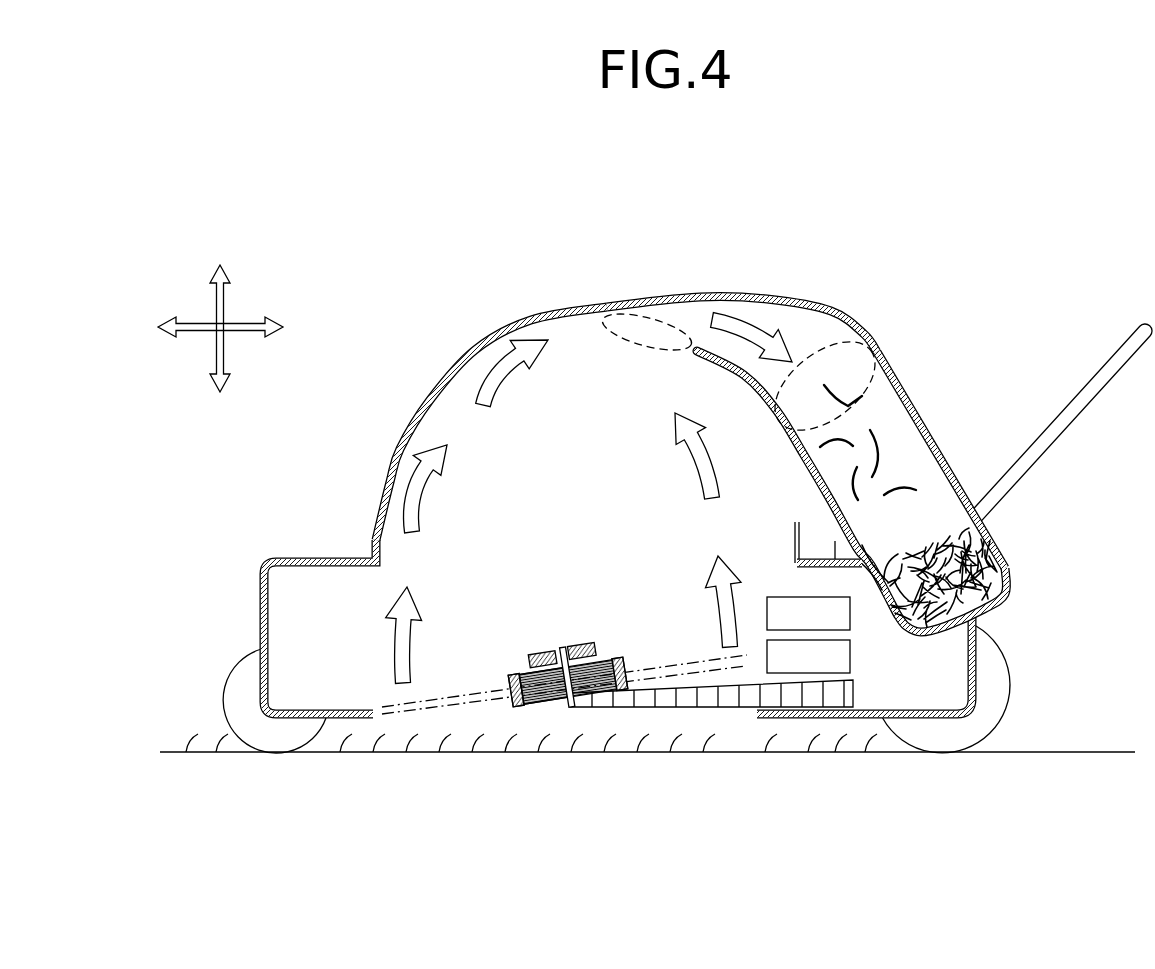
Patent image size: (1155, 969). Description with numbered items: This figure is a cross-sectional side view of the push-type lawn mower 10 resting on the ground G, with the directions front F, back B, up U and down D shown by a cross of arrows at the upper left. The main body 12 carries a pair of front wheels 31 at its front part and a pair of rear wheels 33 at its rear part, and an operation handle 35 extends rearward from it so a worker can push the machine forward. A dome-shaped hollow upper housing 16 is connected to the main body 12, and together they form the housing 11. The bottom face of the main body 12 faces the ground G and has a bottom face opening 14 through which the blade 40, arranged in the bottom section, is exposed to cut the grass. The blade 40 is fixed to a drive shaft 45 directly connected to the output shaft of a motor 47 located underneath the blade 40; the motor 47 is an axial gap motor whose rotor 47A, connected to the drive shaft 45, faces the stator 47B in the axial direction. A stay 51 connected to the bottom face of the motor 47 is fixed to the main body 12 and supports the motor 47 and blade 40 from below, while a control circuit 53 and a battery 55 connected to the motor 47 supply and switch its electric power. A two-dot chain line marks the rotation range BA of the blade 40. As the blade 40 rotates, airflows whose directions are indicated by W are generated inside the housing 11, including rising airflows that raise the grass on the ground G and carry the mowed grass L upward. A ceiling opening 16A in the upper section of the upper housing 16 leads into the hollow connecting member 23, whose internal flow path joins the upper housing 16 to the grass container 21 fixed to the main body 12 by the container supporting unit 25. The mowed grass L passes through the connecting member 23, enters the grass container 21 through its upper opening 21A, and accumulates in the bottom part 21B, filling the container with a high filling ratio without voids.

The lawn mower 10 is at (566, 275).
The housing 11 is at (287, 540).
The main body 12 is at (333, 558).
The bottom face opening 14 is at (402, 726).
The upper housing 16 is at (383, 490).
The ceiling opening 16A is at (685, 350).
The grass container 21 is at (883, 442).
The upper opening 21A is at (834, 350).
The bottom part 21B is at (942, 512).
The connecting member 23 is at (729, 300).
The container supporting unit 25 is at (828, 542).
The front wheel 31 is at (238, 668).
The rear wheel 33 is at (1011, 685).
The operation handle 35 is at (1120, 352).
The blade 40 is at (574, 696).
The drive shaft 45 is at (562, 648).
The motor 47 is at (568, 682).
The rotor 47A is at (543, 686).
The stator 47B is at (568, 682).
The stay 51 is at (747, 707).
The control circuit 53 is at (851, 665).
The battery 55 is at (851, 617).
The rotation range BA is at (465, 713).
The mowed grass L is at (880, 440).
The ground G is at (1107, 750).
The airflow direction W is at (589, 497).
The up direction U is at (220, 315).
The down direction D is at (220, 408).
The front direction F is at (211, 327).
The back direction B is at (294, 327).